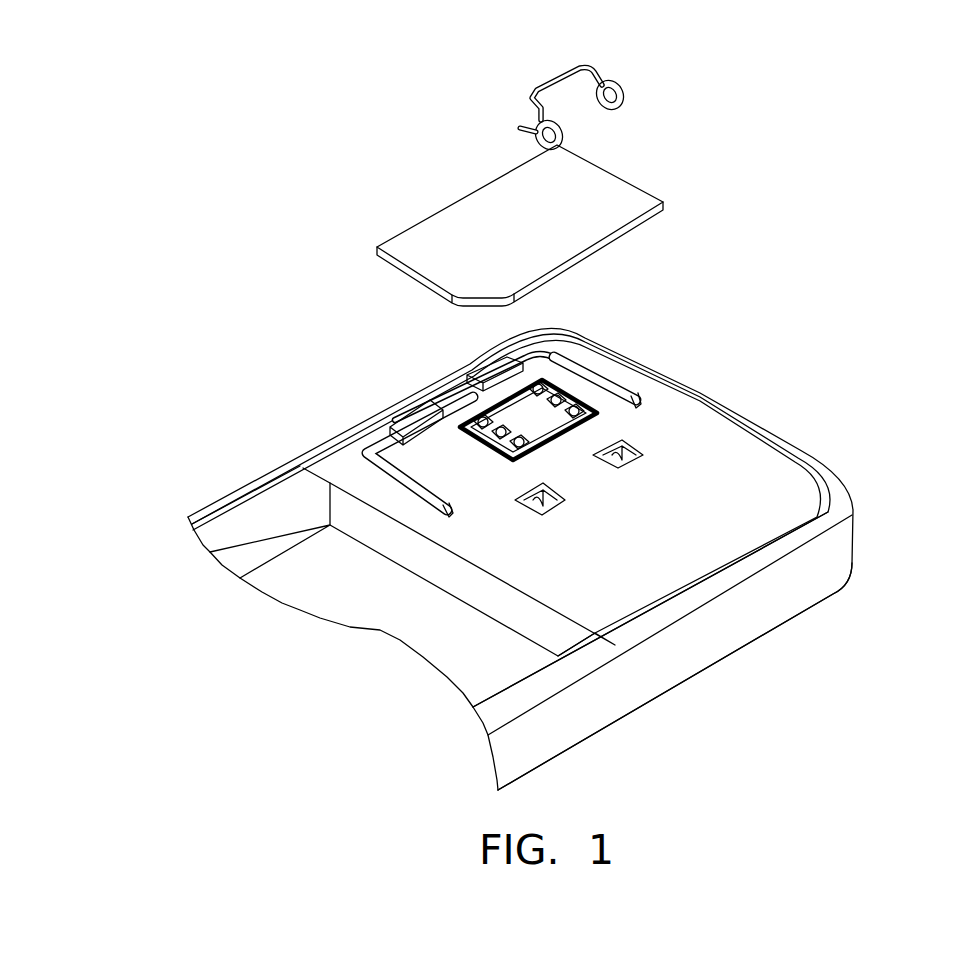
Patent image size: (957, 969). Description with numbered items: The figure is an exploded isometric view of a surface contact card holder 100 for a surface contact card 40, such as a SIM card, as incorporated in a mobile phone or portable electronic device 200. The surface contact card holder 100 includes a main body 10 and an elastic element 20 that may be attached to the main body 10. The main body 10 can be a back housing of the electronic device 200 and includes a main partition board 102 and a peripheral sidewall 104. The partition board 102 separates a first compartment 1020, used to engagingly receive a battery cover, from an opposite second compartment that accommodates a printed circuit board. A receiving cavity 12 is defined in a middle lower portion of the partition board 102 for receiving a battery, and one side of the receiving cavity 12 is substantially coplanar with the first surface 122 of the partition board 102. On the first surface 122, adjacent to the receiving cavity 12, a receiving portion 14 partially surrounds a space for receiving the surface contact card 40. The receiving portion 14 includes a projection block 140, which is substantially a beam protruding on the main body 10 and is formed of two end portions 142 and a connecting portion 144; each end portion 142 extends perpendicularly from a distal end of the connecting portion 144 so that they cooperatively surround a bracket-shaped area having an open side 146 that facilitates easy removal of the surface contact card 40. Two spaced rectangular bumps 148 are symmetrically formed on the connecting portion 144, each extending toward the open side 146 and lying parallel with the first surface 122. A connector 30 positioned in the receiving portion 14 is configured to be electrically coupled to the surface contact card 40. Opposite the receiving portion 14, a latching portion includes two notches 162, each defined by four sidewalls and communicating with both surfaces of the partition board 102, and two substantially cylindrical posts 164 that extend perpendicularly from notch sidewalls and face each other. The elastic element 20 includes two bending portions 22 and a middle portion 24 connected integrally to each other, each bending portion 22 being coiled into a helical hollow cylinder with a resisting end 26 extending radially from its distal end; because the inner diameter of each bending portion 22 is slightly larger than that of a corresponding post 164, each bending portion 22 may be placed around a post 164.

The mobile phone/portable electronic device 200 is at (477, 54).
The surface contact card holder 100 is at (730, 140).
The main body 10 is at (600, 327).
The receiving cavity 12 is at (510, 660).
The first surface 122 is at (778, 507).
The receiving portion 14 is at (575, 380).
The projection block 140 is at (404, 306).
The end portions 142 is at (573, 357).
The connecting portion 144 is at (450, 399).
The open side 146 is at (593, 440).
The rectangular bumps 148 is at (423, 410).
The main partition board 102 is at (218, 533).
The first compartment 1020 is at (268, 483).
The peripheral sidewall 104 is at (550, 742).
The notches 162 is at (628, 448).
The posts 164 is at (565, 502).
The connector 30 is at (583, 403).
The surface contact card 40 is at (455, 232).
The elastic element 20 is at (589, 115).
The bending portions 22 is at (622, 87).
The middle portion 24 is at (543, 88).
The resisting end 26 is at (518, 128).